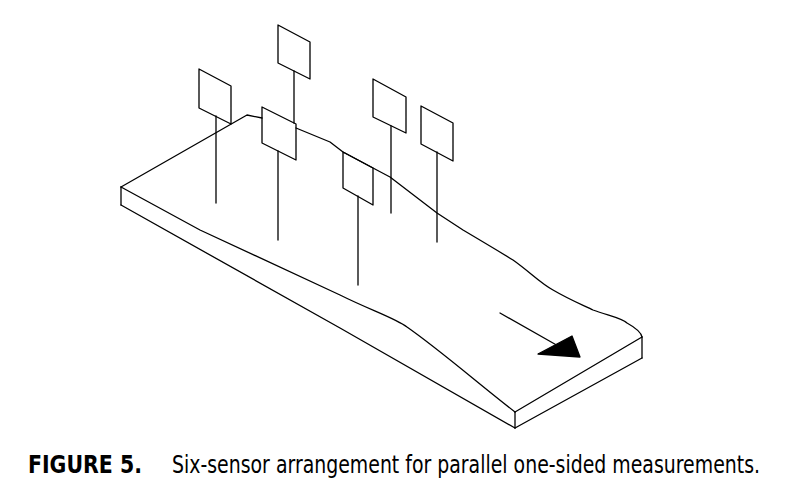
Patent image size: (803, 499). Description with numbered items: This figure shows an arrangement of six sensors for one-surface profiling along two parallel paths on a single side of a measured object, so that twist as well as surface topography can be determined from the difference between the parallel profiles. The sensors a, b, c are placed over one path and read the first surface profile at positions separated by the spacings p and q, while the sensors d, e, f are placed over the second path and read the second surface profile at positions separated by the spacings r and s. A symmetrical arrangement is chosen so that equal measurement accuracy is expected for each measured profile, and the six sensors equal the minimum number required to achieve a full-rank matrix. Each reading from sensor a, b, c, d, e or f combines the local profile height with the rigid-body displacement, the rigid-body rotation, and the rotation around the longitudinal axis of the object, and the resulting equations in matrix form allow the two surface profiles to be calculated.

The sensor a is at (358, 218).
The sensor b is at (279, 173).
The sensor c is at (215, 136).
The sensor d is at (437, 174).
The sensor e is at (389, 146).
The sensor f is at (294, 74).